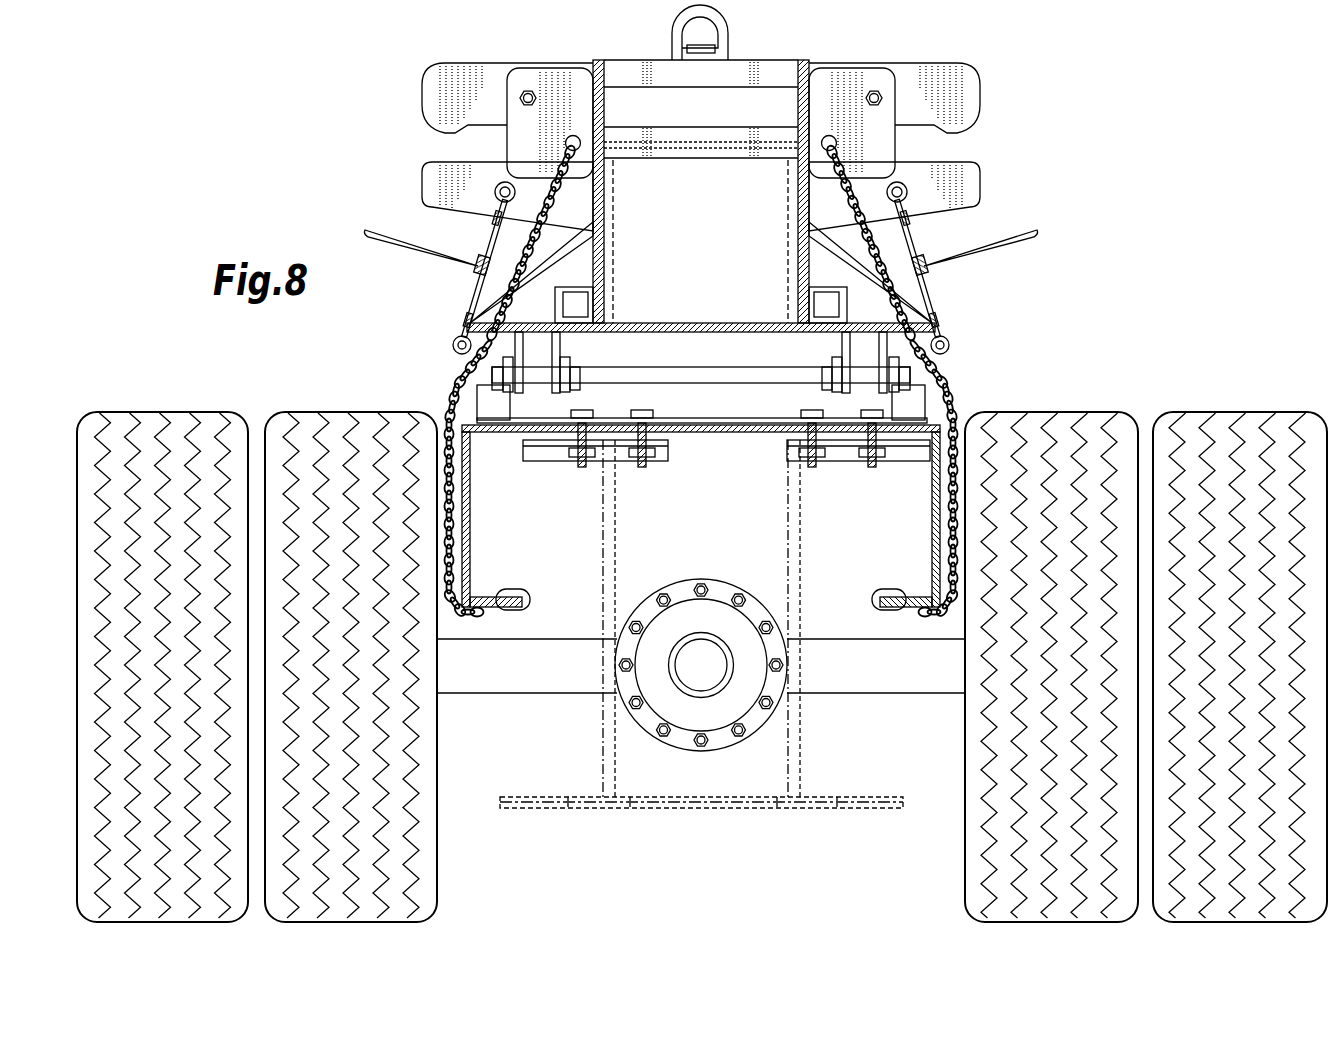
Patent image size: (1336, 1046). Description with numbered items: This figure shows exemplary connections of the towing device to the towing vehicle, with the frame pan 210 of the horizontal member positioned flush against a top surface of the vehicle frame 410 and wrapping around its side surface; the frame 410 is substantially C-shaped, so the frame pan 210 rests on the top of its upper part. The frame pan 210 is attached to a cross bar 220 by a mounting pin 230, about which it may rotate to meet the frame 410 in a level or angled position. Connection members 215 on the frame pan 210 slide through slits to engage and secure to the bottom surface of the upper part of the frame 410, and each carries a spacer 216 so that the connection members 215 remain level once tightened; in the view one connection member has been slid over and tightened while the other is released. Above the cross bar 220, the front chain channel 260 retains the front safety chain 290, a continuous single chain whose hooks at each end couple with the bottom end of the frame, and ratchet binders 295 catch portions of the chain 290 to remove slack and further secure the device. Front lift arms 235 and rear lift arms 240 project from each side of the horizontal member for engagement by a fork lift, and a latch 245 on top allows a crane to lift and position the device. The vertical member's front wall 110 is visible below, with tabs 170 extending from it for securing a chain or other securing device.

The front wall 110 is at (628, 745).
The tabs 170 is at (593, 806).
The frame pan 210 is at (713, 434).
The connection members 215 is at (540, 466).
The spacer 216 is at (668, 440).
The cross bar 220 is at (748, 359).
The mounting pin 230 is at (482, 372).
The front lift arms 235 is at (432, 186).
The rear lift arms 240 is at (427, 96).
The latch 245 is at (672, 36).
The front chain channel 260 is at (690, 160).
The front safety chain 290 is at (533, 252).
The ratchet binders 295 is at (472, 302).
The frame 410 is at (470, 562).